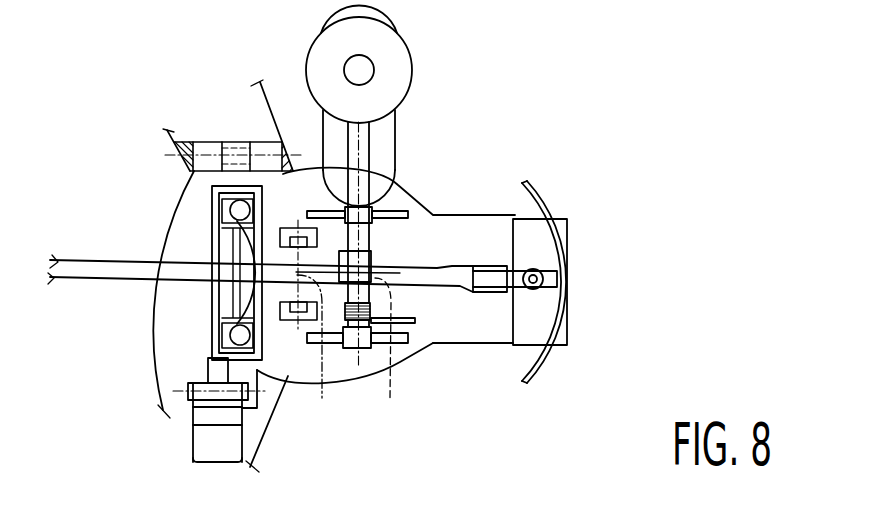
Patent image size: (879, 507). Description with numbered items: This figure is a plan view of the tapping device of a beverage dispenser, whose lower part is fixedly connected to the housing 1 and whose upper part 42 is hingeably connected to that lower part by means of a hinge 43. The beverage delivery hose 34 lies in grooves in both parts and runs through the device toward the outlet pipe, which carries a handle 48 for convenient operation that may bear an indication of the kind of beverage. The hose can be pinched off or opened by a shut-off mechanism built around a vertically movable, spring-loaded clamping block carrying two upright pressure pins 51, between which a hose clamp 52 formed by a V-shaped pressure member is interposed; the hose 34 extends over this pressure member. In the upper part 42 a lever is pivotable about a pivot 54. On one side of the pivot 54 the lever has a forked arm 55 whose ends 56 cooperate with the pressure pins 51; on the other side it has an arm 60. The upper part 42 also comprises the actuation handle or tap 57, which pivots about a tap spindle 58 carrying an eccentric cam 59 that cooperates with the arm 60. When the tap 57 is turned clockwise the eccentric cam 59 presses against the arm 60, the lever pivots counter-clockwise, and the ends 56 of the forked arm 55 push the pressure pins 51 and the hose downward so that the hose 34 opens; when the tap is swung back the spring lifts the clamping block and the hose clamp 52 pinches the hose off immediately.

The housing 1 is at (268, 104).
The beverage delivery hose 34 is at (64, 260).
The upper part 42 is at (415, 197).
The hinge 43 is at (208, 155).
The handle 48 is at (543, 200).
The pressure pins 51 is at (230, 209).
The hose clamp 52 is at (230, 296).
The pivot 54 is at (315, 352).
The forked arm 55 is at (273, 257).
The ends 56 is at (243, 210).
The tap 57 is at (413, 62).
The tap spindle 58 is at (368, 238).
The eccentric cam 59 is at (387, 353).
The arm 60 is at (317, 258).